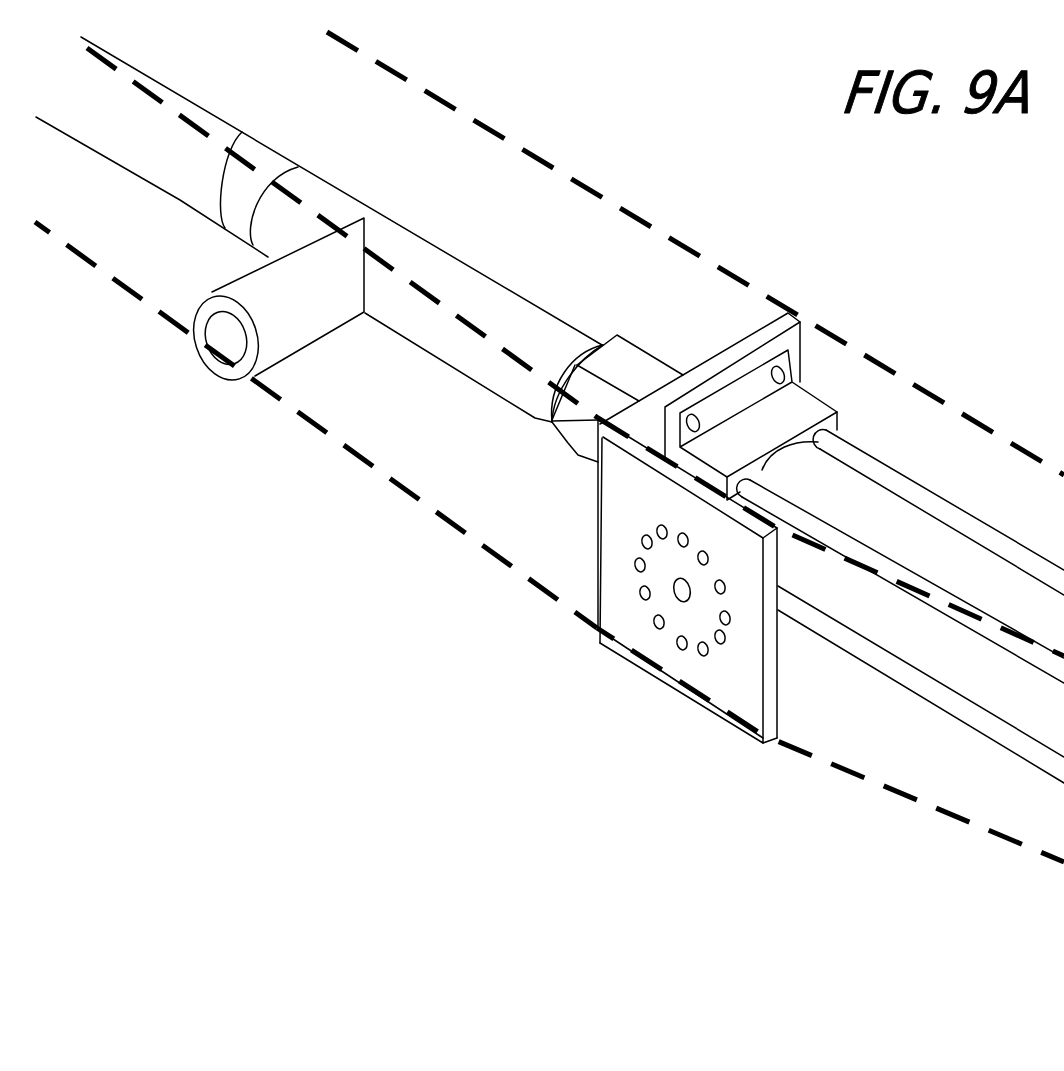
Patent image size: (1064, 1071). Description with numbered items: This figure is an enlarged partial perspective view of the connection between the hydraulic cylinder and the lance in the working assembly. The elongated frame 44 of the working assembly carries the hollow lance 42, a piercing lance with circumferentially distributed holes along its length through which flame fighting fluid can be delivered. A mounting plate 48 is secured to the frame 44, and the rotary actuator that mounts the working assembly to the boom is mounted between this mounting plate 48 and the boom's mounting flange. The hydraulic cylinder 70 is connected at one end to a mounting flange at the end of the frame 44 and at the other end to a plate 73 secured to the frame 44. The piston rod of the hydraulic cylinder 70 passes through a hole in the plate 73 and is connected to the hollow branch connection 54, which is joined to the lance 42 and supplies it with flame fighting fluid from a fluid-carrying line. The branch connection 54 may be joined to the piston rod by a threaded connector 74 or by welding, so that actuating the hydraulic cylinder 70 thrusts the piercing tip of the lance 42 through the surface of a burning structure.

The hollow lance 42 is at (198, 155).
The frame 44 is at (545, 157).
The mounting plate 48 is at (725, 665).
The branch connection 54 is at (282, 317).
The hydraulic cylinder 70 is at (840, 492).
The plate 73 is at (773, 322).
The threaded connector 74 is at (630, 372).